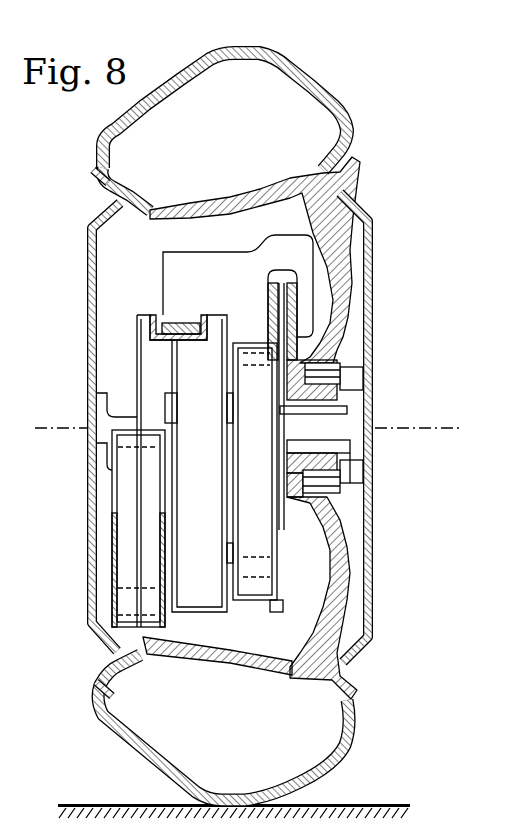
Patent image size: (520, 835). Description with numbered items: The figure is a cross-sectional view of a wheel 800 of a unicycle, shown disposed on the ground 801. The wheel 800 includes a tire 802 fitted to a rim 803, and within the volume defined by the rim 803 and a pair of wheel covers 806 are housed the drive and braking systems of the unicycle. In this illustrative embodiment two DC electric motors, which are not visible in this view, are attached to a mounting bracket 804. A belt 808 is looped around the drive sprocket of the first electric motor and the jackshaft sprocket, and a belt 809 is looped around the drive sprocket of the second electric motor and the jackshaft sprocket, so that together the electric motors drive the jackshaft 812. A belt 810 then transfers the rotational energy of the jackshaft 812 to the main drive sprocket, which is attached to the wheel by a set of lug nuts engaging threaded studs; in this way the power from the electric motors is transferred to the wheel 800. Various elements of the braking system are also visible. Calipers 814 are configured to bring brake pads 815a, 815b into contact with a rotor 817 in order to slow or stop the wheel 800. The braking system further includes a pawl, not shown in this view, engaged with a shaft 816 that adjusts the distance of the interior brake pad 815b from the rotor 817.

The wheel 800 is at (475, 107).
The ground 801 is at (112, 804).
The tire 802 is at (310, 85).
The rim 803 is at (190, 203).
The mounting bracket 804 is at (183, 383).
The wheel covers 806 is at (87, 297).
The belt 808 is at (150, 491).
The belt 809 is at (123, 574).
The belt 810 is at (249, 544).
The jackshaft 812 is at (287, 592).
The calipers 814 is at (262, 263).
The brake pad 815a is at (293, 300).
The interior brake pad 815b is at (268, 301).
The shaft 816 is at (197, 327).
The rotor 817 is at (287, 519).